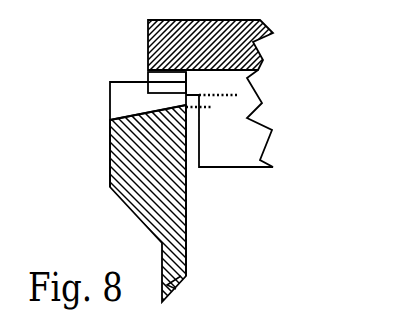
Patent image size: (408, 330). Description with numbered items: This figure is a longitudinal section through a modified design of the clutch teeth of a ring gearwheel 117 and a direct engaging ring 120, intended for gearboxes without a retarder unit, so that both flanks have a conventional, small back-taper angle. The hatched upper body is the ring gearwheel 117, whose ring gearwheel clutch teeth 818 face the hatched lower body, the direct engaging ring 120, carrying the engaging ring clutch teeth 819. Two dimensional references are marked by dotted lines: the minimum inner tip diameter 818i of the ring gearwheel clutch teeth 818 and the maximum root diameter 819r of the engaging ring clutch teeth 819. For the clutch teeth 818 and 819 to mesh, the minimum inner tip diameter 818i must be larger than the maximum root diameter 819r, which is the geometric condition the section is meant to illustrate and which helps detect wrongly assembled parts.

The ring gearwheel 117 is at (176, 52).
The ring gearwheel clutch teeth 818 is at (161, 77).
The engaging ring clutch teeth 819 is at (129, 102).
The direct engaging ring 120 is at (138, 198).
The minimum inner tip diameter 818i is at (236, 105).
The maximum root diameter 819r is at (211, 116).